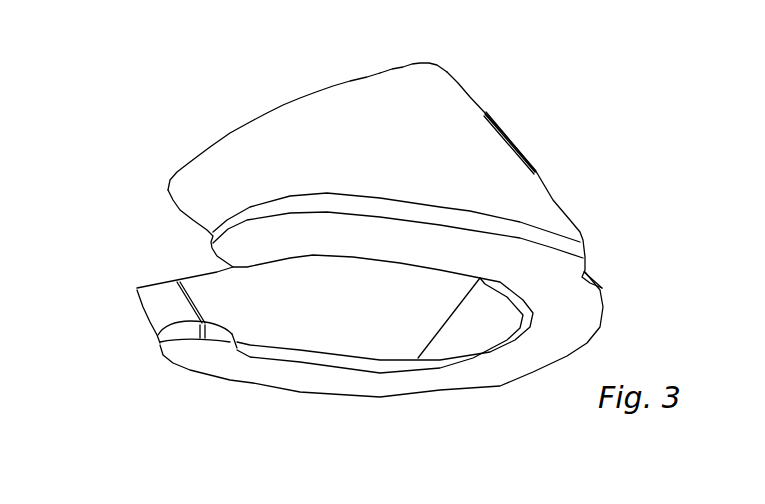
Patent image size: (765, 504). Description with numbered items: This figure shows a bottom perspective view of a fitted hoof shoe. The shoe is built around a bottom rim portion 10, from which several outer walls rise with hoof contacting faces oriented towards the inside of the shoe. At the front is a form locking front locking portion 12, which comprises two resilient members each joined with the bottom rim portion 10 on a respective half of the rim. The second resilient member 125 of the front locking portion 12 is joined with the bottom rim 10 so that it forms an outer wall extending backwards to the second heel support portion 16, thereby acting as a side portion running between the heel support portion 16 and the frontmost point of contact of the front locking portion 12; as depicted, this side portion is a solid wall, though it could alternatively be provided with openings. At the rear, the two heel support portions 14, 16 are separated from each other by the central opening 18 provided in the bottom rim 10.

The bottom rim portion 10 is at (364, 304).
The form locking front locking portion 12 is at (536, 139).
The heel support portion 14 is at (149, 266).
The second heel support portion 16 is at (163, 176).
The central opening 18 is at (398, 398).
The second resilient member 125 is at (422, 62).